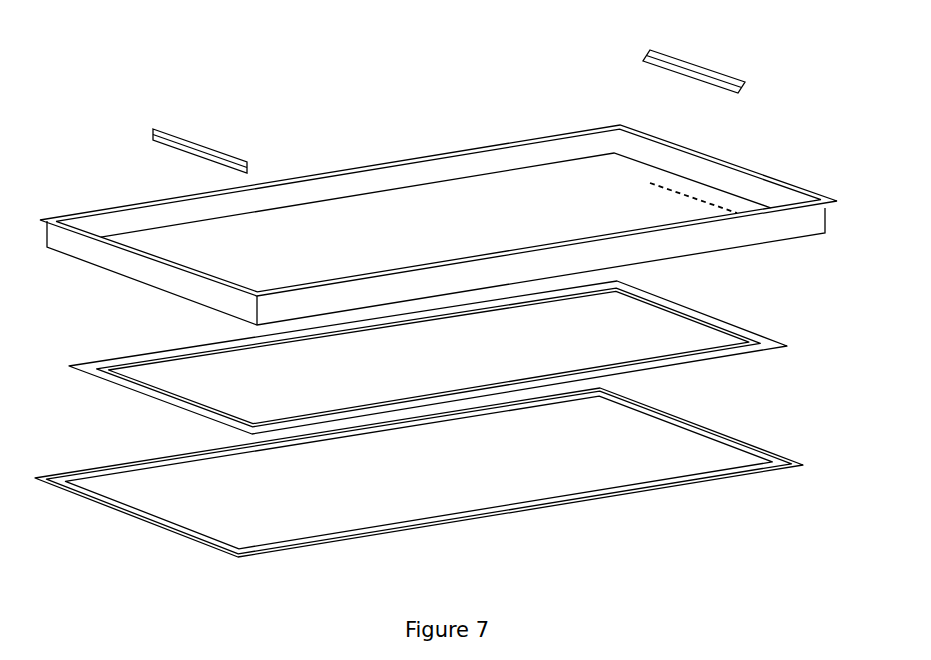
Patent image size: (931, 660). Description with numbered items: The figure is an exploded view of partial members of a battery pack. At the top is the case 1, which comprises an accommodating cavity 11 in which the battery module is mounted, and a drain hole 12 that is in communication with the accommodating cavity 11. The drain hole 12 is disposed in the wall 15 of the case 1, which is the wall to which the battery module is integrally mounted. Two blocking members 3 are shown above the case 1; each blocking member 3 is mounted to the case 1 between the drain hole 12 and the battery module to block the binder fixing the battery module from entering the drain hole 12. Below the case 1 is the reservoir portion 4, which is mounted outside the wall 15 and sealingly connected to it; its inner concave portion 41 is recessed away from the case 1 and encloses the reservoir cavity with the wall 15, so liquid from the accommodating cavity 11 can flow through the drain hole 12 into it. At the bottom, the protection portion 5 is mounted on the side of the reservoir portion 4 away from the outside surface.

The case 1 is at (438, 204).
The accommodating cavity 11 is at (434, 208).
The drain hole 12 is at (720, 207).
The wall 15 is at (533, 185).
The blocking member 3 is at (200, 152).
The reservoir portion 4 is at (440, 357).
The inner concave portion 41 is at (675, 325).
The protection portion 5 is at (740, 452).